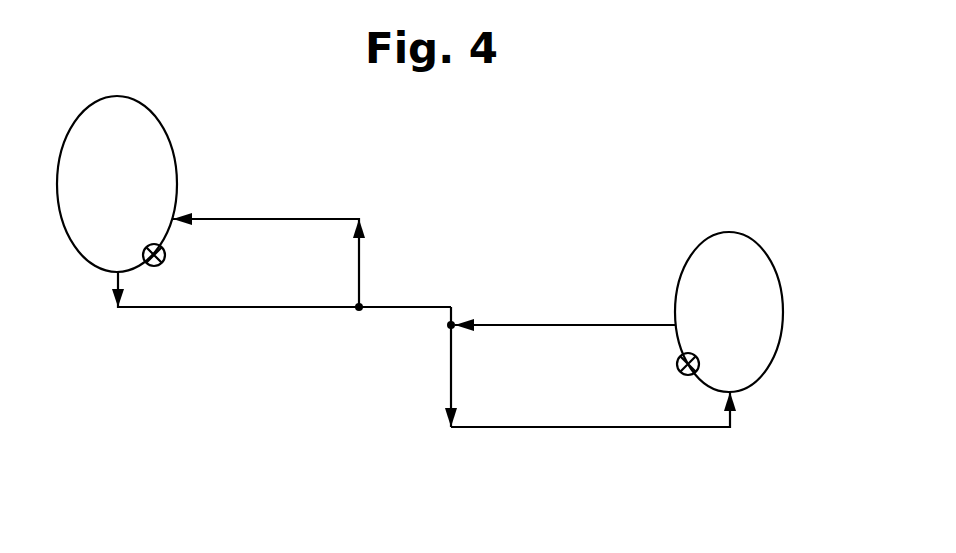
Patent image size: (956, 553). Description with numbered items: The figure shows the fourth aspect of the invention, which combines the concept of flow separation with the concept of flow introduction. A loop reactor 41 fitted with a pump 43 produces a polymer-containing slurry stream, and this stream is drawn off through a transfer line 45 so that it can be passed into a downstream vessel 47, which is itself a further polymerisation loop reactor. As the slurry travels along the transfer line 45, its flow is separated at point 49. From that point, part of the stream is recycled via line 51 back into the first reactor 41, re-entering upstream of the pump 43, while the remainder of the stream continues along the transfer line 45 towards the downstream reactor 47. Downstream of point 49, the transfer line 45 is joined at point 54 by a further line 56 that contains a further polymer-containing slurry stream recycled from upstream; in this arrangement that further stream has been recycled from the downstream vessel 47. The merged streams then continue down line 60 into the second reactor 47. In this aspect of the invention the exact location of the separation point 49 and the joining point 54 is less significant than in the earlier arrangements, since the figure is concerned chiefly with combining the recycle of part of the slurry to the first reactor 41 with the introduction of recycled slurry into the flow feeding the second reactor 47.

The loop reactor 41 is at (172, 142).
The pump 43 is at (154, 266).
The transfer line 45 is at (212, 308).
The downstream vessel 47 is at (773, 270).
The separation point 49 is at (357, 308).
The recycle line 51 is at (273, 219).
The joining point 54 is at (447, 327).
The further line 56 is at (580, 325).
The line 60 is at (612, 425).